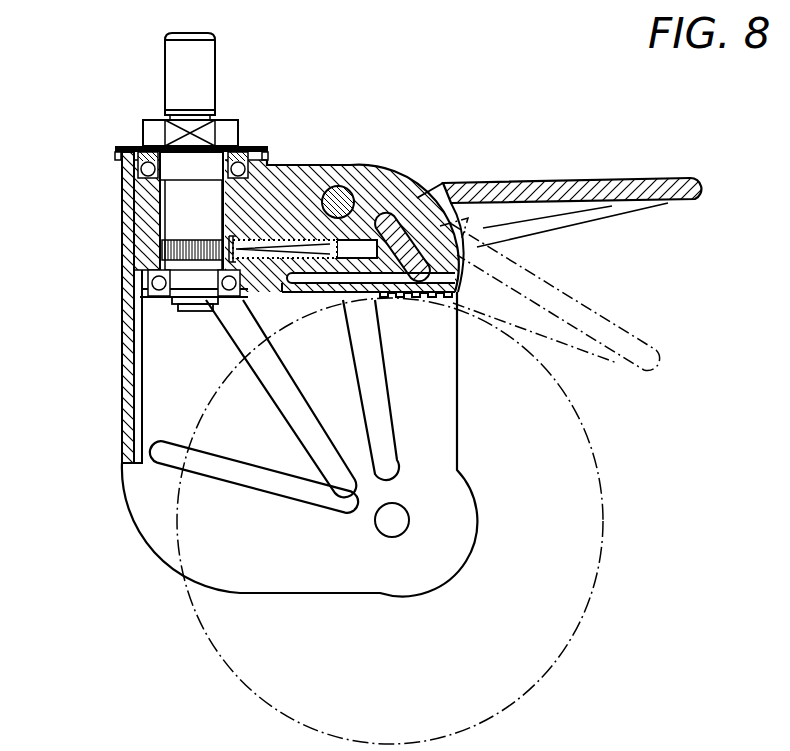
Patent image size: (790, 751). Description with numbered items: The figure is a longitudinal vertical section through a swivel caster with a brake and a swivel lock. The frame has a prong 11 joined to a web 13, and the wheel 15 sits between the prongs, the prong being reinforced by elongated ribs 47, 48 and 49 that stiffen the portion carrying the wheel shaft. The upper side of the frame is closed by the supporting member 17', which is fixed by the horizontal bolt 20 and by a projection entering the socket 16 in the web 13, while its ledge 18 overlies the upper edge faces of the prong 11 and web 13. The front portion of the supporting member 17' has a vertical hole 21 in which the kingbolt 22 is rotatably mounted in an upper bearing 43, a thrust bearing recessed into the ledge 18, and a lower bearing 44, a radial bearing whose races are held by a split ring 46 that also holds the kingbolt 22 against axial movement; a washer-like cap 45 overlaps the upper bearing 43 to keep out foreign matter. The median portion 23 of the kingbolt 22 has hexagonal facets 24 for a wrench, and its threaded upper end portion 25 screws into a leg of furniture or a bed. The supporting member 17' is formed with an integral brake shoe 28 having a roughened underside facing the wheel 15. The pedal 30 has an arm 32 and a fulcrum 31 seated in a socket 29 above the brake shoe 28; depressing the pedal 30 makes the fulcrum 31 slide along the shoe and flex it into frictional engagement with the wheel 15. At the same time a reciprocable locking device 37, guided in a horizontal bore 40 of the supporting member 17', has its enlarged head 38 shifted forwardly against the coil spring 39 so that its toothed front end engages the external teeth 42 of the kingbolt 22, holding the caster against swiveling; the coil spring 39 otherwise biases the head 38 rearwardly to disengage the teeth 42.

The prong 11 is at (280, 566).
The web 13 is at (125, 428).
The wheel 15 is at (608, 493).
The socket 16 is at (150, 276).
The supporting member 17' is at (342, 187).
The ledge 18 is at (115, 149).
The bolt 20 is at (356, 238).
The hole 21 is at (126, 200).
The kingbolt 22 is at (172, 222).
The median portion 23 is at (150, 128).
The facets 24 is at (185, 116).
The upper end portion 25 is at (200, 57).
The brake shoe 28 is at (456, 300).
The socket 29 is at (395, 293).
The pedal 30 is at (600, 186).
The fulcrum 31 is at (420, 197).
The arm 32 is at (608, 210).
The reciprocable device 37 is at (280, 262).
The head 38 is at (400, 222).
The coil spring 39 is at (333, 190).
The bore 40 is at (318, 284).
The external teeth 42 is at (162, 256).
The upper bearing 43 is at (140, 152).
The lower bearing 44 is at (136, 300).
The cap 45 is at (255, 148).
The split ring 46 is at (158, 312).
The rib 47 is at (225, 474).
The rib 48 is at (294, 410).
The rib 49 is at (380, 415).